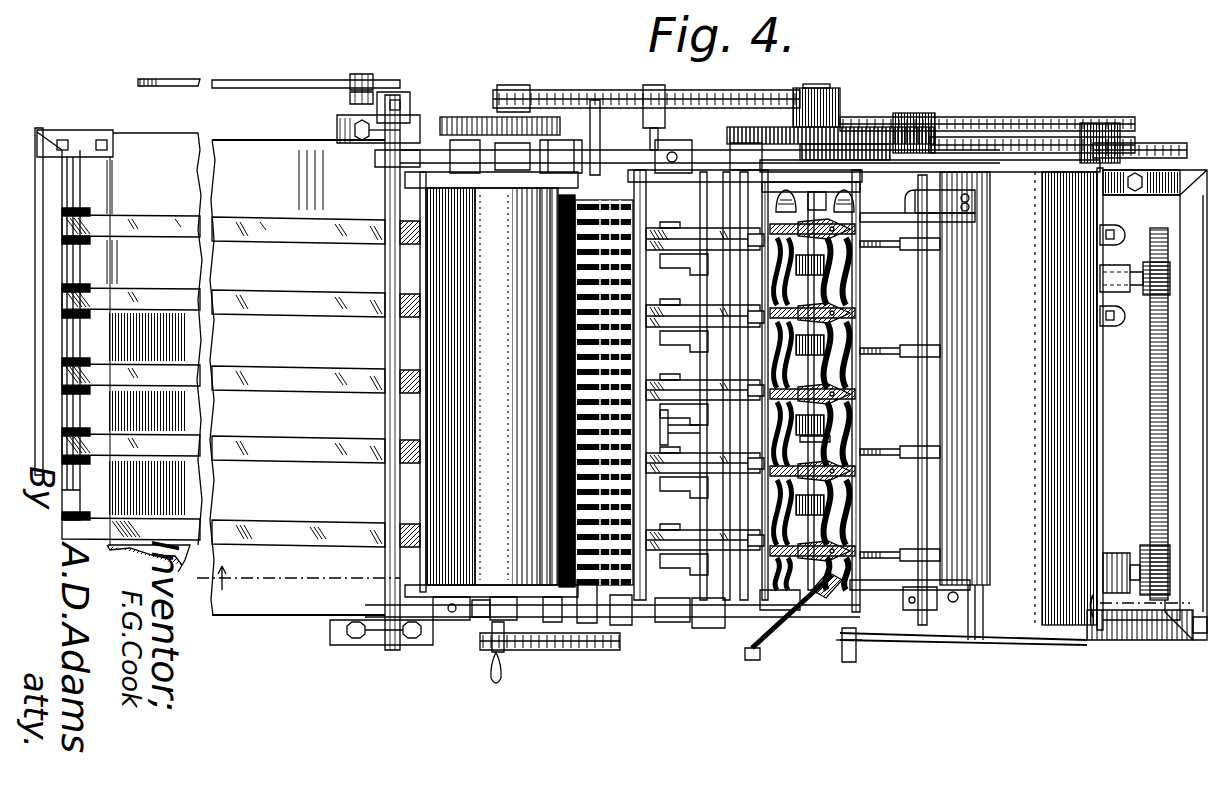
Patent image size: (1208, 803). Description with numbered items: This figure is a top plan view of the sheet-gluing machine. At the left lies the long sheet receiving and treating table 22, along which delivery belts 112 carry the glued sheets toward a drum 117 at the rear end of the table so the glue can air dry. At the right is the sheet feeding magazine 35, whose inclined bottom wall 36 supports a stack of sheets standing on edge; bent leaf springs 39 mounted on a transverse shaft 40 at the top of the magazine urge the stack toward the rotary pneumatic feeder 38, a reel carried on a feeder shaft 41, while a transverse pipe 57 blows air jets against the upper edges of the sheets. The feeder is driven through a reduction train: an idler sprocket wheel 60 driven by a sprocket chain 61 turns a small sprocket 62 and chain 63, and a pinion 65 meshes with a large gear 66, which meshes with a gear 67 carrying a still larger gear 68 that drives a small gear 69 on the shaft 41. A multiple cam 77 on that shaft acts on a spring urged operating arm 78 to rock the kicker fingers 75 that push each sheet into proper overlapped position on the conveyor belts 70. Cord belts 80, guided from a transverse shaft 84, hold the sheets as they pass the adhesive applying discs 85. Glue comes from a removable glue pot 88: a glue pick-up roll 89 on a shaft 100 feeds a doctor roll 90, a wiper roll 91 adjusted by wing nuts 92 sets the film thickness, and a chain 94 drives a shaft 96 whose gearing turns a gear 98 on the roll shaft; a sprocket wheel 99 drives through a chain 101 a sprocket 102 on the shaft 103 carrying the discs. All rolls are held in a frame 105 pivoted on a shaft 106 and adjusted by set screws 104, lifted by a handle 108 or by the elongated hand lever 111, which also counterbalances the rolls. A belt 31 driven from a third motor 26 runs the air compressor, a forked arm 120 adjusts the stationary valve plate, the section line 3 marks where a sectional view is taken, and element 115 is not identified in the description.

The section line 3- 3 is at (693, 584).
The sheet receiving and treating table 22 is at (270, 610).
The third motor 26 is at (1105, 548).
The belt 31 is at (1150, 405).
The sheet feeding magazine 35 is at (996, 387).
The inclined bottom wall 36 is at (841, 414).
The rotary pneumatic feeder 38 is at (862, 305).
The bent leaf springs 39 is at (872, 548).
The transverse shaft 40 is at (930, 510).
The feeder shaft 41 is at (830, 447).
The transverse pipe 57 is at (858, 392).
The idler sprocket wheel 60 is at (1172, 143).
The sprocket chain 61 is at (1037, 158).
The small sprocket 62 is at (1112, 125).
The chain 63 is at (1020, 137).
The pinion 65 is at (935, 125).
The large gear 66 is at (758, 127).
The gear 67 is at (880, 117).
The larger gear 68 is at (875, 162).
The small gear 69 is at (845, 105).
The conveyor belts 70 is at (648, 505).
The kicker fingers 75 is at (855, 555).
The multiple cam 77 is at (849, 650).
The operating arm 78 is at (768, 655).
The cord belts 80 is at (698, 232).
The transverse shaft 84 is at (700, 432).
The adhesive applying discs 85 is at (633, 350).
The glue pot 88 is at (420, 560).
The glue pick-up roll 89 is at (480, 620).
The doctor roll 90 is at (563, 308).
The wiper roll 91 is at (410, 478).
The wing nuts 92 is at (455, 622).
The chain 94 is at (718, 100).
The shaft 96 is at (512, 90).
The gear 98 is at (560, 126).
The sprocket wheel 99 is at (518, 650).
The shaft 100 is at (490, 660).
The chain 101 is at (570, 650).
The sprocket 102 is at (597, 650).
The shaft 103 is at (606, 650).
The set screws 104 is at (663, 622).
The frame 105 is at (388, 635).
The shaft 106 is at (385, 272).
The handle 108 is at (498, 655).
The hand lever 111 is at (240, 58).
The delivery belts 112 is at (258, 382).
The block 115 is at (700, 628).
The drum 117 is at (88, 345).
The forked arm 120 is at (811, 385).